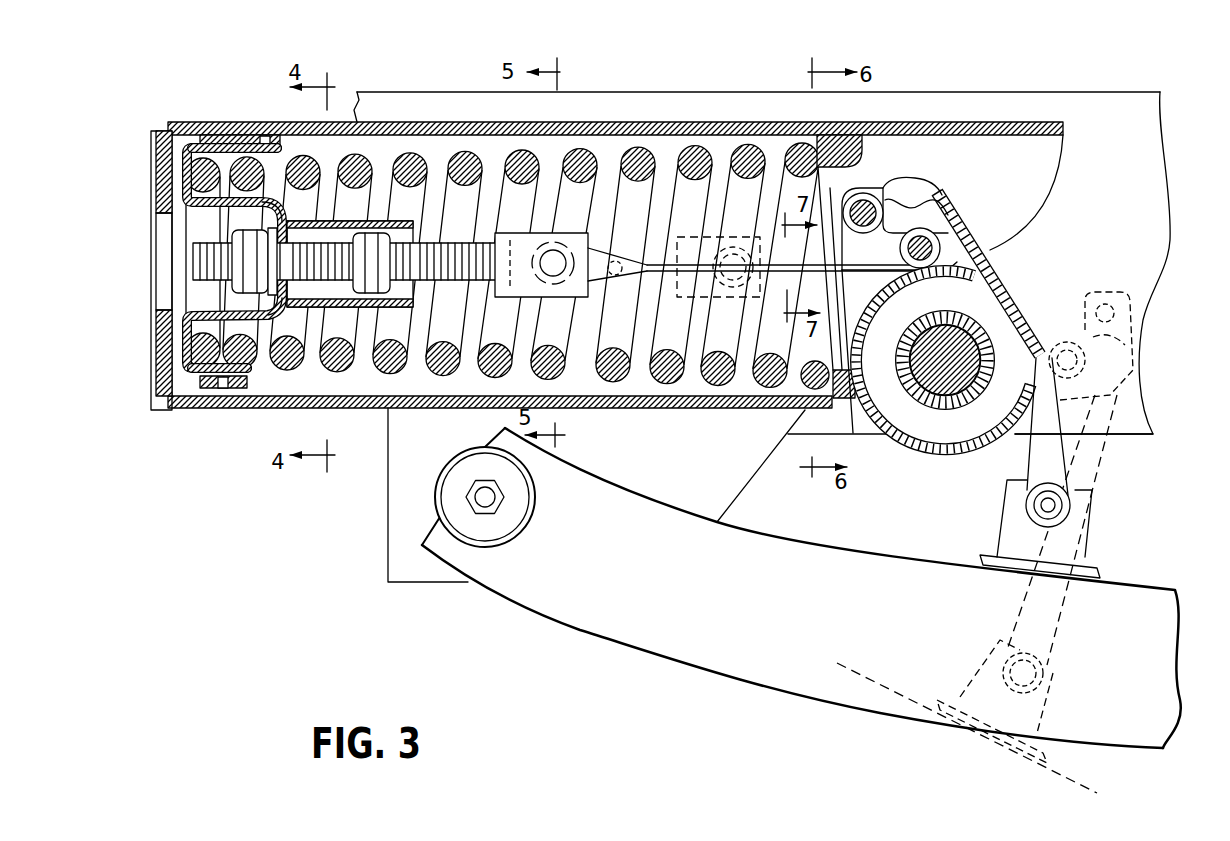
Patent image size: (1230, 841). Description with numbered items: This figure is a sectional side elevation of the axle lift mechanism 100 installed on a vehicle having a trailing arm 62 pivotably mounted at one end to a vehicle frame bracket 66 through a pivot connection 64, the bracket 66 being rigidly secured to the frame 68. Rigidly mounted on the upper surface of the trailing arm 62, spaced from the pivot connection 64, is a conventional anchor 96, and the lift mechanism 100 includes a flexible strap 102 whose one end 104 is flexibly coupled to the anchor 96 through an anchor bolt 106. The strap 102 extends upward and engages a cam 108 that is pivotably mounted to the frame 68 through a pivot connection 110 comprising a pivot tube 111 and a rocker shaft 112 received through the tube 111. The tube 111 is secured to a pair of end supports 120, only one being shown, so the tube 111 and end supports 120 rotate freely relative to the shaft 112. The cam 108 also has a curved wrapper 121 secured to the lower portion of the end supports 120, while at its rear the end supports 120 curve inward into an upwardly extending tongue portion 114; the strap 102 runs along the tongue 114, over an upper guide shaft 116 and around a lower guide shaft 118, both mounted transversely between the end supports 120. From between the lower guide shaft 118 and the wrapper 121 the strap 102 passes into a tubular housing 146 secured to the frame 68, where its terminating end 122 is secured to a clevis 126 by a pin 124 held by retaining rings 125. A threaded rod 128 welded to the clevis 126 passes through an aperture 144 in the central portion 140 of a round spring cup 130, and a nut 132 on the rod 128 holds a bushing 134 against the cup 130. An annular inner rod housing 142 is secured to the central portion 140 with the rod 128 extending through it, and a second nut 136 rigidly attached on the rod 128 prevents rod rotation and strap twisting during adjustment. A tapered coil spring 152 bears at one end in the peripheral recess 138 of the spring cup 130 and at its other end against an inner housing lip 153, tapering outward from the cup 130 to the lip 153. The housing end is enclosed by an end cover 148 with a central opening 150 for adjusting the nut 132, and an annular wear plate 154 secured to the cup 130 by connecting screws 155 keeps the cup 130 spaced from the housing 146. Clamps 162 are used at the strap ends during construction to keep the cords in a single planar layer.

The trailing arm 62 is at (785, 702).
The pivot connection 64 is at (447, 457).
The vehicle frame bracket 66 is at (388, 527).
The frame 68 is at (1138, 92).
The anchor 96 is at (1087, 555).
The axle lift mechanism 100 is at (1087, 207).
The flexible strap 102 is at (1190, 445).
The end of strap 104 is at (1028, 515).
The anchor bolt 106 is at (1070, 505).
The cam 108 is at (897, 460).
The pivot connection 110 is at (966, 376).
The pivot tube 111 is at (958, 312).
The rocker shaft 112 is at (957, 343).
The tongue portion 114 is at (987, 340).
The upper guide shaft 116 is at (885, 198).
The lower guide shaft 118 is at (900, 250).
The end support 120 is at (865, 193).
The curved wrapper 121 is at (942, 457).
The terminating end of strap 122 is at (628, 258).
The pin 124 is at (555, 282).
The retaining rings 125 is at (575, 282).
The clevis 126 is at (530, 235).
The threaded rod 128 is at (466, 246).
The spring cup 130 is at (185, 133).
The nut 132 is at (238, 231).
The bushing 134 is at (266, 297).
The second nut 136 is at (360, 238).
The peripheral recess 138 is at (278, 157).
The central portion 140 is at (275, 302).
The inner rod housing 142 is at (402, 221).
The aperture 144 is at (288, 242).
The tubular housing 146 is at (628, 410).
The end cover 148 is at (153, 177).
The opening 150 is at (148, 263).
The tapered coil spring 152 is at (345, 163).
The inner housing lip 153 is at (803, 133).
The annular wear plate 154 is at (230, 135).
The connecting screws 155 is at (265, 136).
The clamps 162 is at (620, 278).